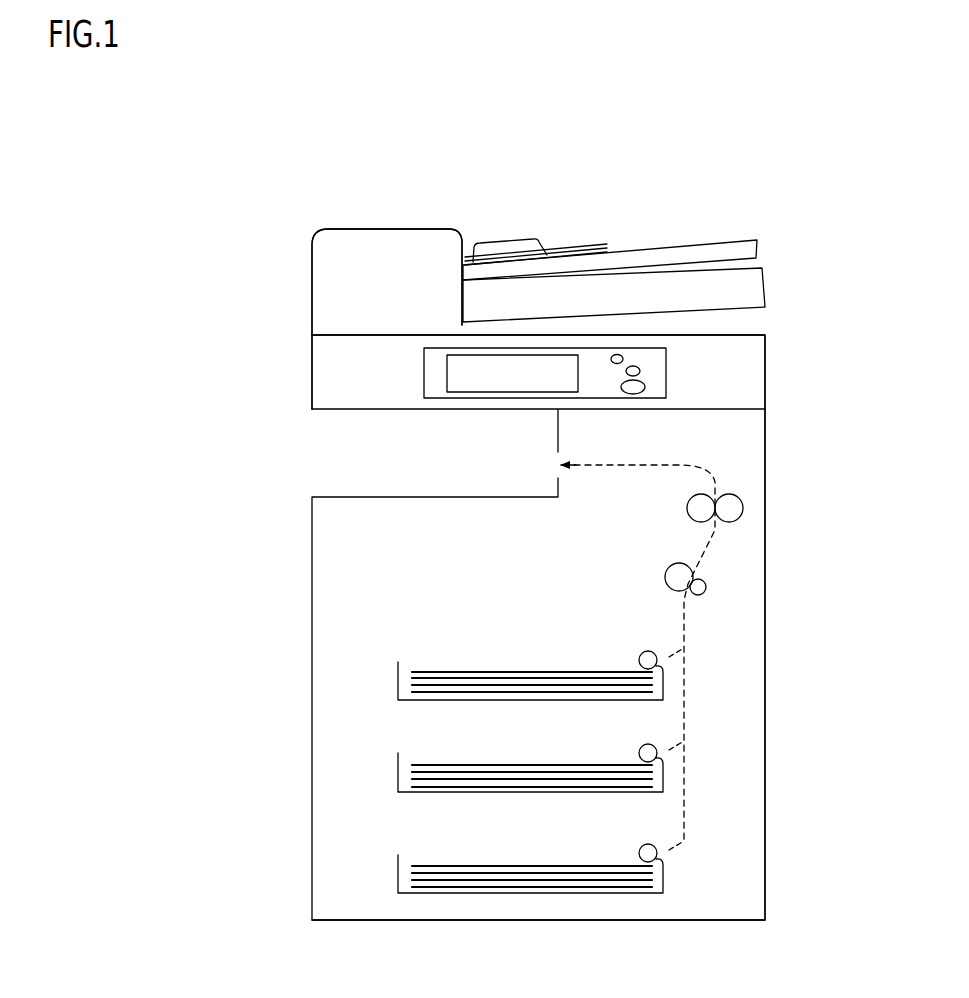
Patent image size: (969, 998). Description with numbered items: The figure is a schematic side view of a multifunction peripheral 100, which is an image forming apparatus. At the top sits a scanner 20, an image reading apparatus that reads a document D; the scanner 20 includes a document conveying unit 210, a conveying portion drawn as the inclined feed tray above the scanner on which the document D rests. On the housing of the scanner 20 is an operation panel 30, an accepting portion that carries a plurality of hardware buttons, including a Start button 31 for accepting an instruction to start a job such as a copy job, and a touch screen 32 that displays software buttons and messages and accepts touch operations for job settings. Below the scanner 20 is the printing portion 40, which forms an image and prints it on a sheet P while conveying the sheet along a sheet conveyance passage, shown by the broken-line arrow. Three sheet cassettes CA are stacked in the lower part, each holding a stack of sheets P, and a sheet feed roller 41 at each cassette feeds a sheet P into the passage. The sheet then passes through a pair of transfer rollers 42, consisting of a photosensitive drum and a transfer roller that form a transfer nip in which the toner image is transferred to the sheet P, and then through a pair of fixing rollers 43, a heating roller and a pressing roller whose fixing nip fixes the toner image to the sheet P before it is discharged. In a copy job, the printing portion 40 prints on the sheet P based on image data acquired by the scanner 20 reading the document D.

The multifunction peripheral 100 is at (302, 221).
The document conveying unit 210 is at (449, 228).
The document D is at (600, 246).
The scanner 20 is at (770, 365).
The operation panel 30 is at (670, 363).
The Start button 31 is at (644, 387).
The touch screen 32 is at (453, 377).
The printing portion 40 is at (770, 453).
The pair of fixing rollers 43 is at (697, 503).
The pair of transfer rollers 42 is at (673, 572).
The sheet feed roller 41 is at (642, 653).
The sheet P is at (490, 670).
The sheet cassette CA is at (400, 682).